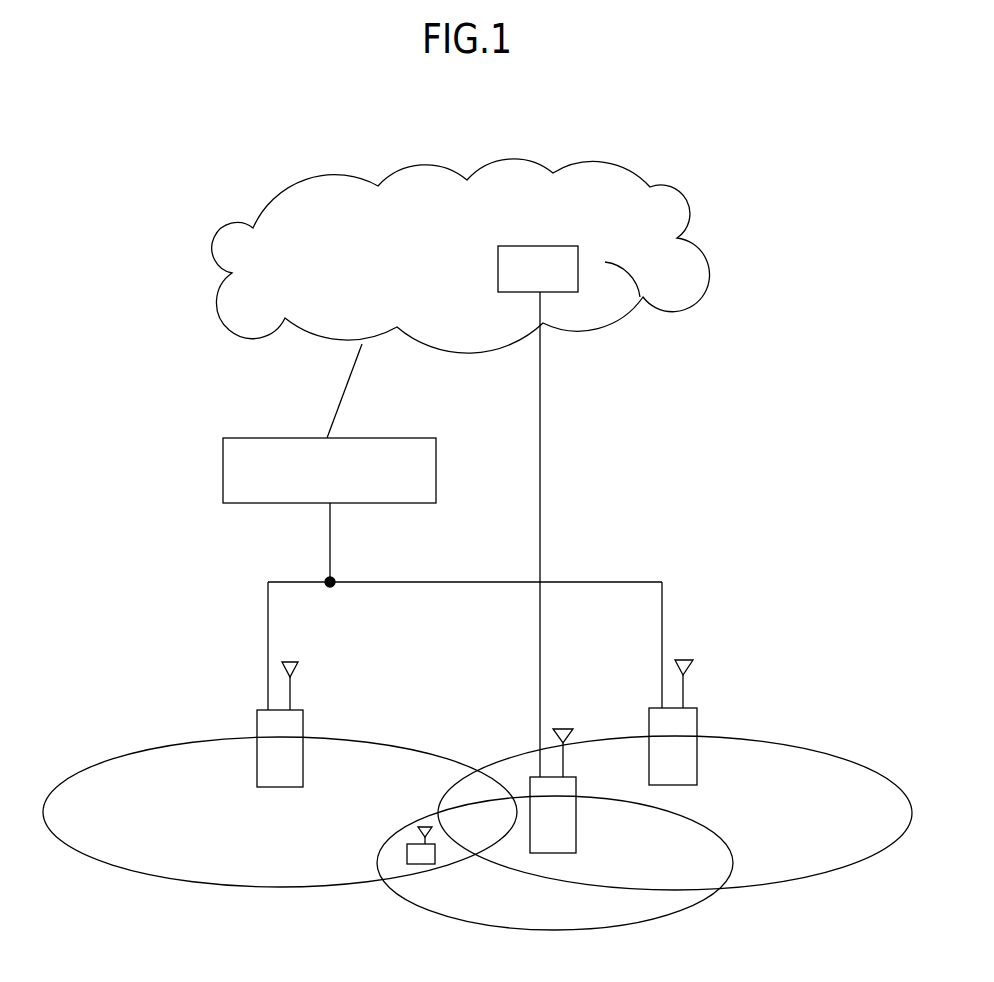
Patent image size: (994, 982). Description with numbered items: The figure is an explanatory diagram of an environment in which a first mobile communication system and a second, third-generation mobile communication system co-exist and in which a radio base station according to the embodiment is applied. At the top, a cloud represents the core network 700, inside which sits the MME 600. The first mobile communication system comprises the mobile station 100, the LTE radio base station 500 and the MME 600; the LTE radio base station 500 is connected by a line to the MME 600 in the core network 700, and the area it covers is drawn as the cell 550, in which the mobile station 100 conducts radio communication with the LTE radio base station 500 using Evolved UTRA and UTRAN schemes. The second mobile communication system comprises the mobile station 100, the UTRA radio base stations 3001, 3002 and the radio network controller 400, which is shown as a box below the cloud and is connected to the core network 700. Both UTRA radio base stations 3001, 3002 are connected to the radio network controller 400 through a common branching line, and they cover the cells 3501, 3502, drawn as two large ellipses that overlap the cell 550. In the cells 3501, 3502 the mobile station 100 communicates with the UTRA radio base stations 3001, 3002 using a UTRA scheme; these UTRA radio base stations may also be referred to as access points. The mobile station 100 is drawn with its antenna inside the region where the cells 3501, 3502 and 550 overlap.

The core network 700 is at (615, 160).
The MME 600 is at (546, 246).
The radio network controller 400 is at (367, 437).
The UTRA radio base station 3001 is at (303, 720).
The UTRA radio base station 3002 is at (697, 715).
The LTE radio base station 500 is at (576, 833).
The mobile station 100 is at (428, 865).
The cell 3501 is at (233, 887).
The cell 3502 is at (785, 738).
The cell 550 is at (588, 932).